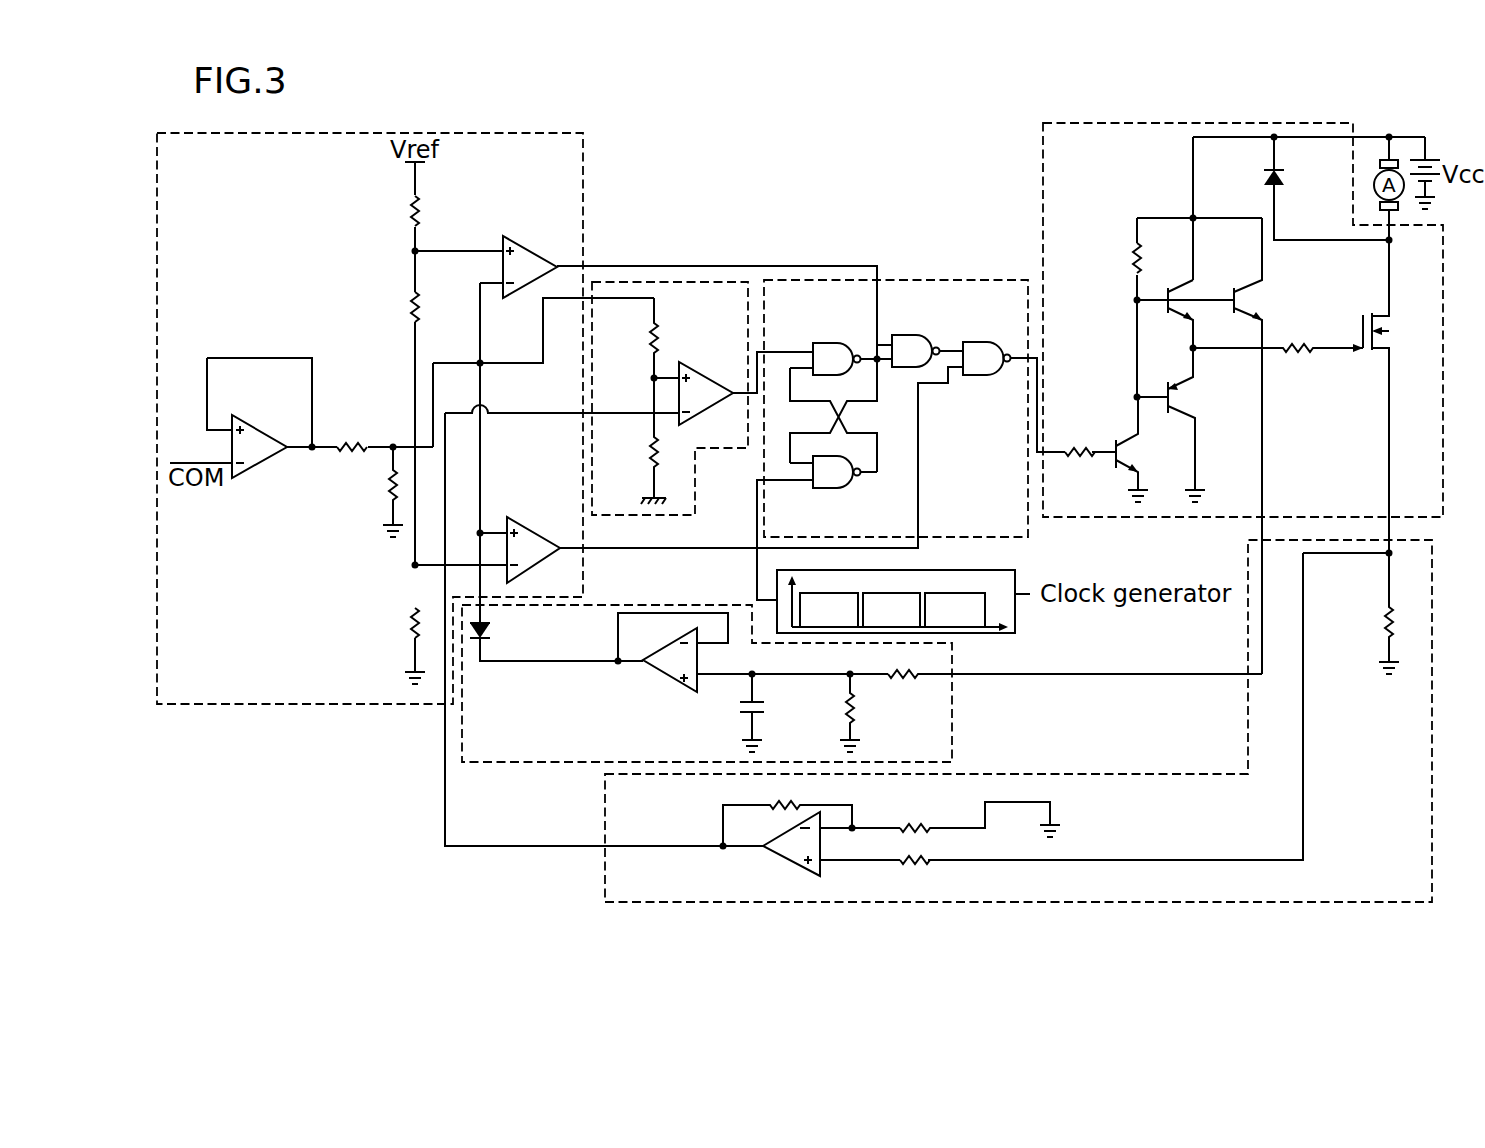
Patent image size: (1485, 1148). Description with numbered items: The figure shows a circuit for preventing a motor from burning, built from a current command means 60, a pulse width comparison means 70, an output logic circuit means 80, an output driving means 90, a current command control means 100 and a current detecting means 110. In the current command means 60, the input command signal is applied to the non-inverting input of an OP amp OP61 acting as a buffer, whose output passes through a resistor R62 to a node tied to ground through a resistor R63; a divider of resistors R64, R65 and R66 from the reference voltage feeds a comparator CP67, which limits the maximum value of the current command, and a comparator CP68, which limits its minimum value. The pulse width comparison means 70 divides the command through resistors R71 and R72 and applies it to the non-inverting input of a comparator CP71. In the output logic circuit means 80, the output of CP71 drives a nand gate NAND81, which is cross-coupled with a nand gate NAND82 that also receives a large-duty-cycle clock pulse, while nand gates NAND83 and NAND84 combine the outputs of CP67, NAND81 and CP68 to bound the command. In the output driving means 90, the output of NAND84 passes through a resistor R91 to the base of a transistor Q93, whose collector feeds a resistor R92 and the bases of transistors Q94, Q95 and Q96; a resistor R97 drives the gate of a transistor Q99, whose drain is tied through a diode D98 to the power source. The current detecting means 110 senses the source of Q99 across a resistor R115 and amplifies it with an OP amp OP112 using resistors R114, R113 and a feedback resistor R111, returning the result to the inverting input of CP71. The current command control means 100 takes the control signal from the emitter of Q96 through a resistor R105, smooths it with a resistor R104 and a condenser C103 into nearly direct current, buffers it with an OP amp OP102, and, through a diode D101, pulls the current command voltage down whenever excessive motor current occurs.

The current command means 60 is at (583, 192).
The pulse width comparison means 70 is at (720, 448).
The output logic circuit means 80 is at (920, 280).
The output driving means 90 is at (1043, 194).
The current command control means 100 is at (952, 716).
The current detecting means 110 is at (1248, 712).
The OP amp OP61 is at (266, 403).
The resistor R62 is at (348, 432).
The resistor R63 is at (369, 492).
The resistor R64 is at (388, 212).
The resistor R65 is at (388, 307).
The resistor R66 is at (387, 623).
The comparator CP67 is at (540, 226).
The comparator CP68 is at (544, 507).
The resistor R71 is at (629, 338).
The resistor R72 is at (633, 441).
The comparator CP71 is at (714, 352).
The nand gate NAND81 is at (828, 343).
The nand gate NAND82 is at (832, 488).
The NAND gate NAND83 is at (928, 309).
The NAND gate NAND84 is at (980, 375).
The resistor R91 is at (1078, 440).
The resistor R92 is at (1111, 260).
The transistor Q93 is at (1140, 449).
The transistor Q94 is at (1190, 300).
The transistor Q95 is at (1188, 425).
The transistor Q96 is at (1233, 446).
The resistor R97 is at (1278, 363).
The diode D98 is at (1326, 188).
The transistor Q99 is at (1393, 396).
The diode D101 is at (544, 597).
The OP amp OP102 is at (658, 679).
The condenser C103 is at (723, 713).
The resistor R104 is at (819, 713).
The resistor R105 is at (1069, 691).
The resistor R111 is at (787, 811).
The OP amp OP112 is at (784, 862).
The resistor R113 is at (972, 819).
The resistor R114 is at (916, 874).
The resistor R115 is at (1358, 613).